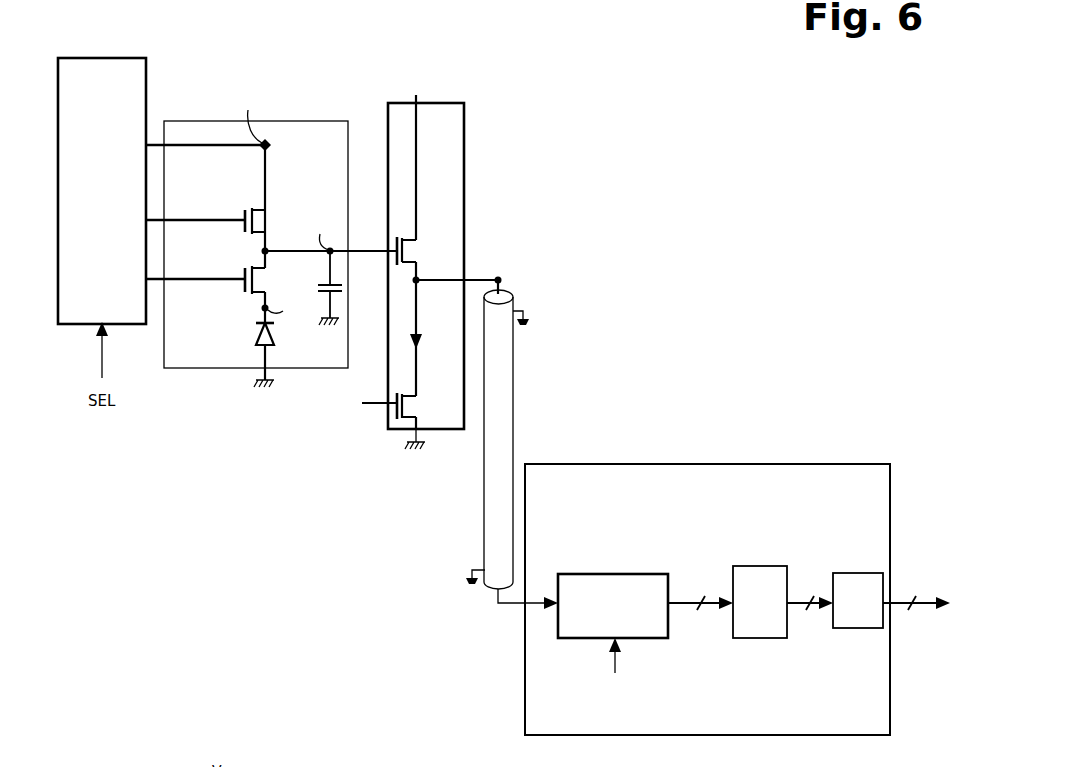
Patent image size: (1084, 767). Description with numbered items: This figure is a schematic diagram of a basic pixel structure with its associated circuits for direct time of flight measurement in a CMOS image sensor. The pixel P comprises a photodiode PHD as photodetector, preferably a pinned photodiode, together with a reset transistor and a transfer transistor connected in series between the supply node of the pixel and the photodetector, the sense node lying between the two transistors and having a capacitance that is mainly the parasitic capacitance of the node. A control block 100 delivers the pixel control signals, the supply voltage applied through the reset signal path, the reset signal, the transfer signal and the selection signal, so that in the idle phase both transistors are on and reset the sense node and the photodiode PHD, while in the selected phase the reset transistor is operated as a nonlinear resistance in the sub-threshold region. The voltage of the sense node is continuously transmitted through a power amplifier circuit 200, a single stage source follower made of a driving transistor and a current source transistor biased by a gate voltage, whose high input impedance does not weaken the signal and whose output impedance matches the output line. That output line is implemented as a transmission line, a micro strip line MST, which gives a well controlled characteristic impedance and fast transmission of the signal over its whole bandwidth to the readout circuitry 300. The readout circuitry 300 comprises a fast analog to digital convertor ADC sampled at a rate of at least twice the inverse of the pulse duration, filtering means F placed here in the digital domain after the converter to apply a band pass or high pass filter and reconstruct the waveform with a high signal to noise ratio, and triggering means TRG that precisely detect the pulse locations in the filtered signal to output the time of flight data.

The selection/control circuit 100 is at (58, 58).
The power amplifier circuit 200 is at (464, 103).
The readout circuitry 300 is at (838, 456).
The pixel P is at (336, 121).
The photodiode PHD is at (257, 340).
The micro strip line MST is at (513, 372).
The analog to digital convertor ADC is at (592, 574).
The filtering means F is at (757, 566).
The triggering means TRG is at (866, 573).